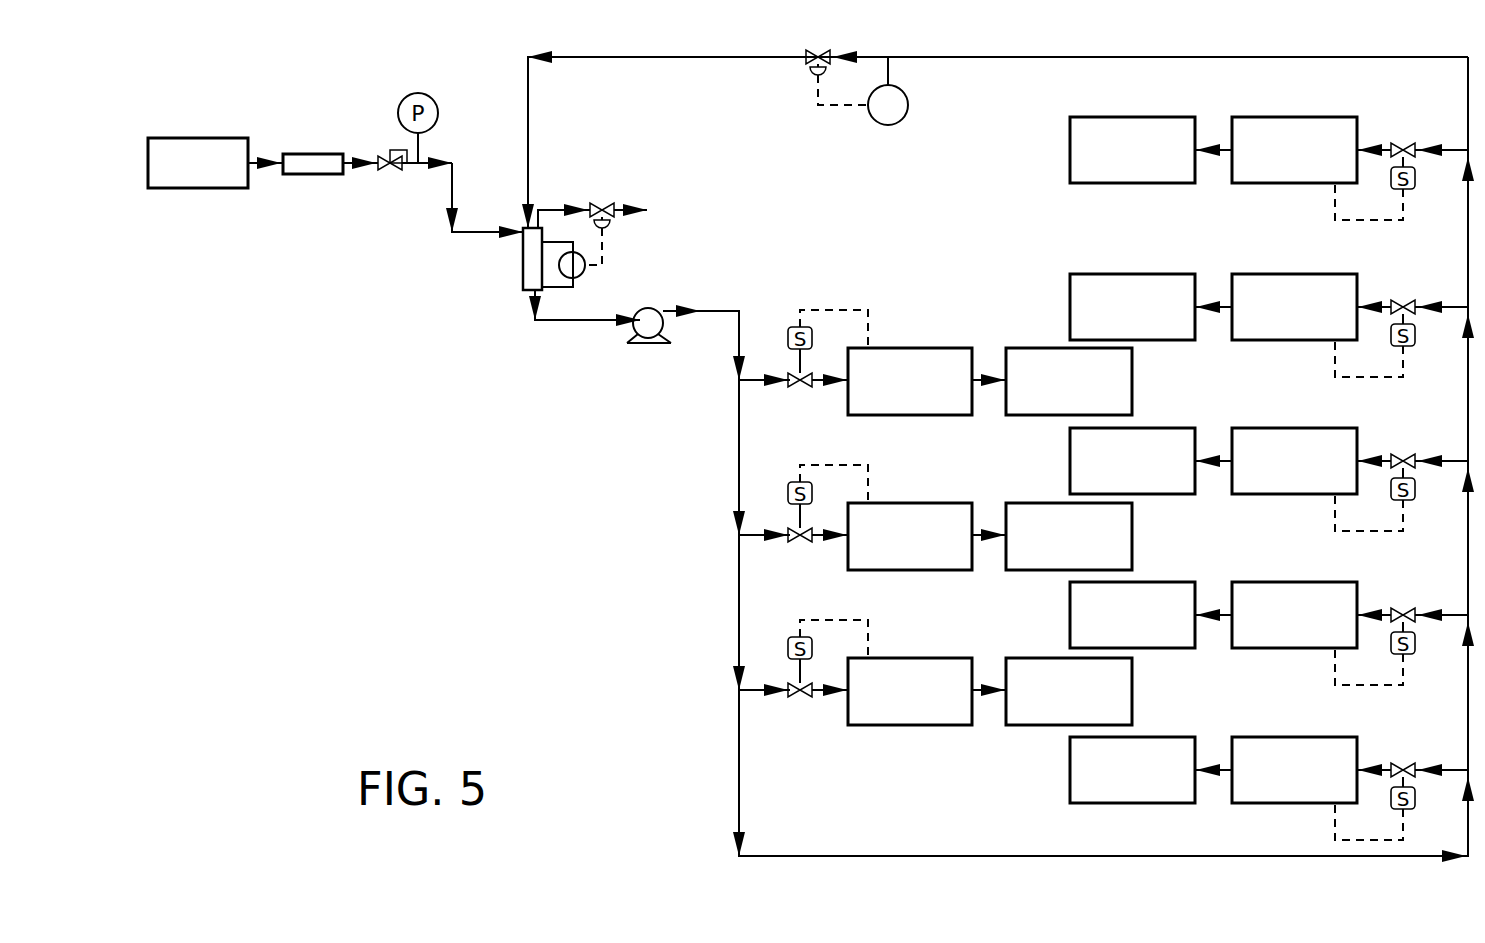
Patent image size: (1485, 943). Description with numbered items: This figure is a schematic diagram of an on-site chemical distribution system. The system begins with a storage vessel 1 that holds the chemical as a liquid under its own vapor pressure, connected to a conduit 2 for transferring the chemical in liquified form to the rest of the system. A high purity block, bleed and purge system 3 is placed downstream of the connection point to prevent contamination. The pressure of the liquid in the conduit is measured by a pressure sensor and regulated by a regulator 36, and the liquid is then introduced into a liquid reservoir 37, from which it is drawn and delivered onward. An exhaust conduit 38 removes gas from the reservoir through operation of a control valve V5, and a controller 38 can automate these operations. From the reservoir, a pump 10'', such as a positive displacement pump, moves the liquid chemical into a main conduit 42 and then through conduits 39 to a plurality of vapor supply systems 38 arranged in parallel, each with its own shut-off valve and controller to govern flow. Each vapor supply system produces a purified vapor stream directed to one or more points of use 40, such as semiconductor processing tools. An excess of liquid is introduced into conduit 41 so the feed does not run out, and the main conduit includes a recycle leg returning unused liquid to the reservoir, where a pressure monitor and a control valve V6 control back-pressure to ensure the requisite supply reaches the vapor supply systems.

The storage vessel 1 is at (190, 177).
The conduit 2 is at (260, 165).
The high purity block, bleed and purge system 3 is at (311, 175).
The regulator 36 is at (390, 170).
The liquid reservoir 37 is at (523, 263).
The vapor supply system 38 is at (555, 210).
The conduit 39 is at (752, 380).
The point of use 40 is at (1056, 393).
The conduit 41 is at (566, 321).
The main conduit 42 is at (719, 311).
The pump 10'' is at (650, 358).
The control valve V5 is at (602, 200).
The control valve V6 is at (818, 49).